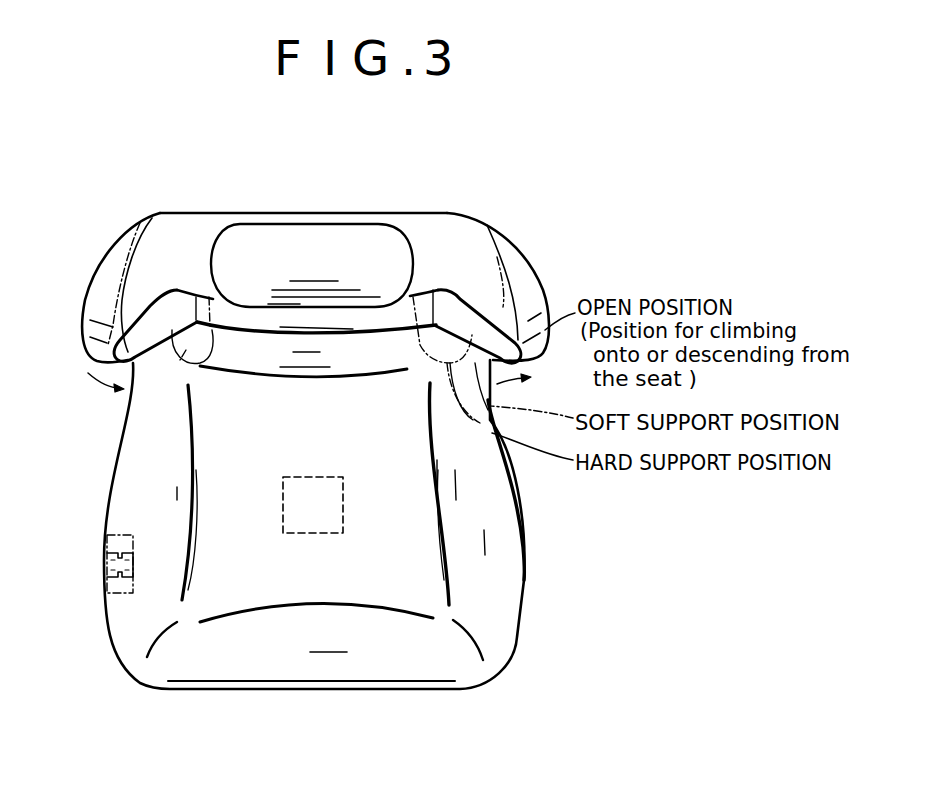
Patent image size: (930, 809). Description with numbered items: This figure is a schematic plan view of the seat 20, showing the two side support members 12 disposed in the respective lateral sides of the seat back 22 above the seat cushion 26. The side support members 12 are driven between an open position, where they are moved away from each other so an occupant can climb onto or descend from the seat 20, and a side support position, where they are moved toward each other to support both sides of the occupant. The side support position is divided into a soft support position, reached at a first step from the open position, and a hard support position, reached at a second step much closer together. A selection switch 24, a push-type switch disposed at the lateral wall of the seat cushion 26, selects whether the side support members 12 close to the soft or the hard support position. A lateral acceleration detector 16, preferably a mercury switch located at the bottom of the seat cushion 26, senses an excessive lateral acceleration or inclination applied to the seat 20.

The side support member 12 is at (95, 287).
The lateral acceleration detector 16 is at (285, 528).
The seat 20 is at (547, 570).
The seat back 22 is at (447, 214).
The selection switch 24 is at (105, 556).
The seat cushion 26 is at (465, 678).